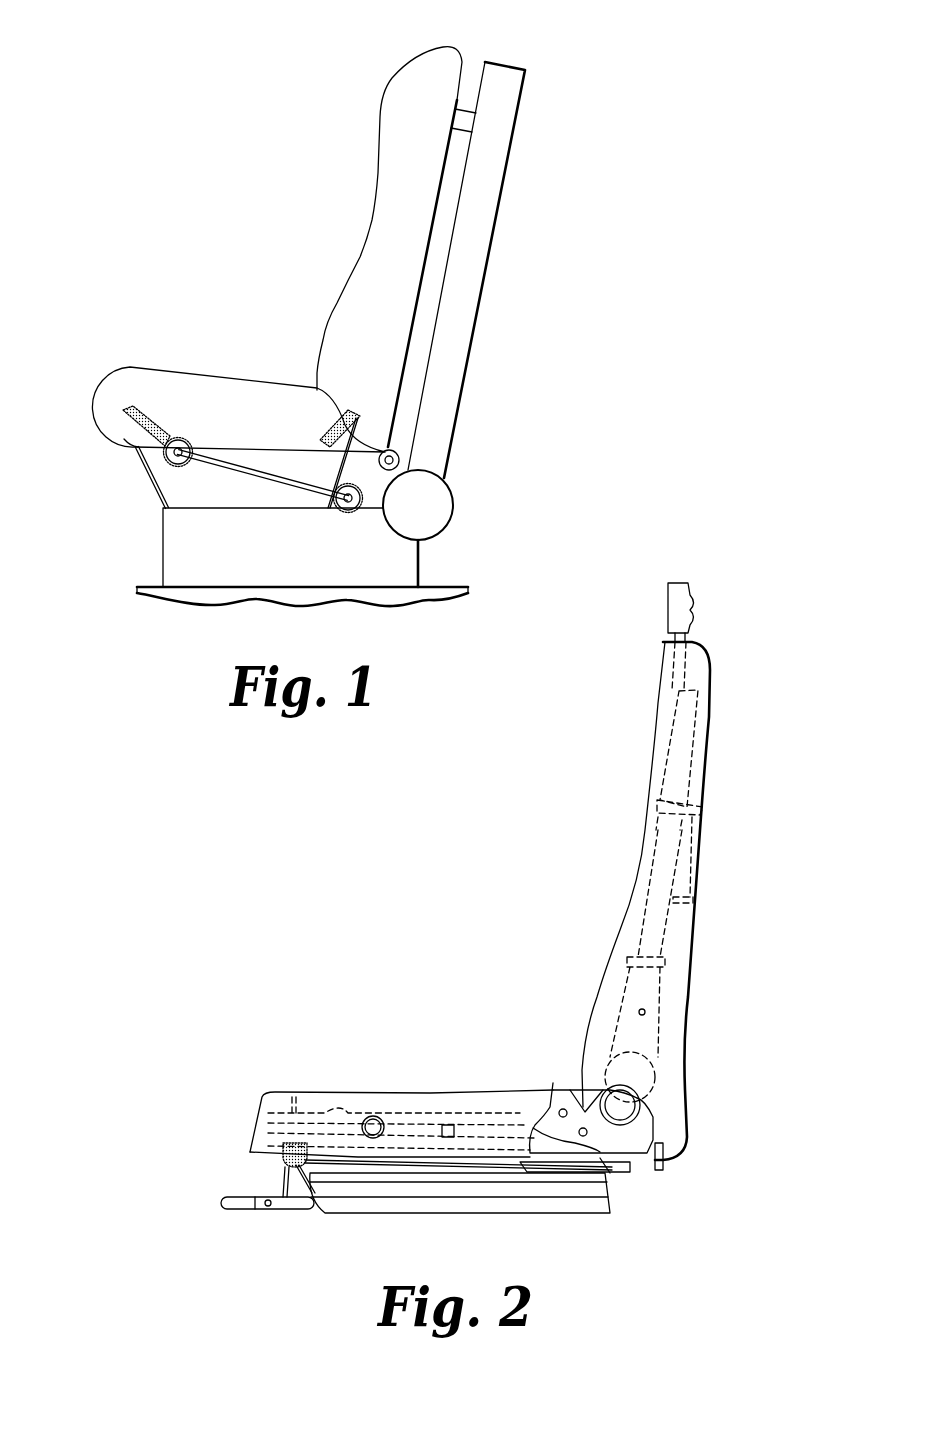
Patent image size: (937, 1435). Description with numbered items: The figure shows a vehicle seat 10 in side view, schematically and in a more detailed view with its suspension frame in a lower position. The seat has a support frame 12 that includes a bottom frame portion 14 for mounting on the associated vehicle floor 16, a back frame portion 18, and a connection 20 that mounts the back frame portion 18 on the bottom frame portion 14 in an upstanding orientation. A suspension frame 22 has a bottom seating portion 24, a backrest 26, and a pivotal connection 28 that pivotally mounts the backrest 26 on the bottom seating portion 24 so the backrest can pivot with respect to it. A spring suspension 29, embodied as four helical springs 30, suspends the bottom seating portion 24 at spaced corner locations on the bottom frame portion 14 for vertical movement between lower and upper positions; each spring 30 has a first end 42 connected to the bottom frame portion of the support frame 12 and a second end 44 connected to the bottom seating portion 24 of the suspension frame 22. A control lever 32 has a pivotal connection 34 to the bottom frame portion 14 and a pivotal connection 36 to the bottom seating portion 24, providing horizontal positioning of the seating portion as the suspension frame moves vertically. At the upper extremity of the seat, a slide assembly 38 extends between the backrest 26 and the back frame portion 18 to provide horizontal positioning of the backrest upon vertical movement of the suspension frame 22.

In FIG. 1, the vehicle seat 10 is at (270, 163).
In FIG. 2, the vehicle seat 10 is at (490, 857).
In FIG. 1, the support frame 12 is at (428, 565).
In FIG. 2, the support frame 12 is at (631, 1176).
In FIG. 1, the bottom frame portion 14 is at (163, 533).
In FIG. 2, the bottom frame portion 14 is at (400, 1193).
In FIG. 1, the vehicle floor 16 is at (304, 597).
In FIG. 1, the back frame portion 18 is at (482, 297).
In FIG. 2, the back frame portion 18 is at (693, 895).
In FIG. 1, the connection 20 is at (456, 513).
In FIG. 2, the connection 20 is at (683, 1077).
In FIG. 1, the suspension frame 22 is at (324, 294).
In FIG. 2, the suspension frame 22 is at (537, 977).
In FIG. 1, the bottom seating portion 24 is at (222, 372).
In FIG. 2, the bottom seating portion 24 is at (429, 1090).
In FIG. 1, the backrest 26 is at (372, 220).
In FIG. 2, the backrest 26 is at (634, 839).
In FIG. 1, the pivotal connection 28 is at (400, 464).
In FIG. 1, the spring suspension 29 is at (131, 444).
In FIG. 2, the spring suspension 29 is at (276, 1147).
In FIG. 1, the springs 30 is at (167, 437).
In FIG. 2, the springs 30 is at (287, 1162).
In FIG. 1, the control lever 32 is at (260, 480).
In FIG. 2, the control lever 32 is at (486, 1172).
In FIG. 1, the pivotal connection 34 is at (349, 504).
In FIG. 1, the pivotal connection 36 is at (177, 463).
In FIG. 1, the slide assembly 38 is at (468, 100).
In FIG. 2, the slide assembly 38 is at (703, 808).
In FIG. 1, the first end 42 is at (123, 407).
In FIG. 1, the second end 44 is at (170, 447).